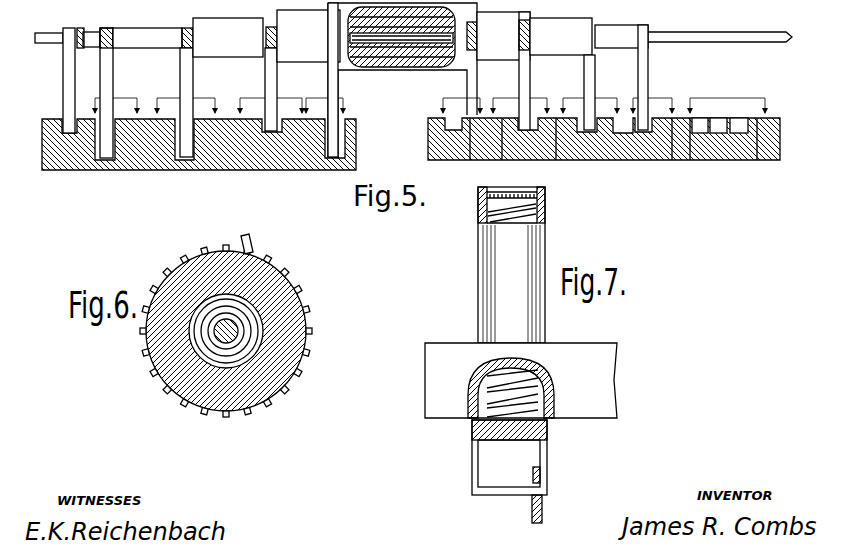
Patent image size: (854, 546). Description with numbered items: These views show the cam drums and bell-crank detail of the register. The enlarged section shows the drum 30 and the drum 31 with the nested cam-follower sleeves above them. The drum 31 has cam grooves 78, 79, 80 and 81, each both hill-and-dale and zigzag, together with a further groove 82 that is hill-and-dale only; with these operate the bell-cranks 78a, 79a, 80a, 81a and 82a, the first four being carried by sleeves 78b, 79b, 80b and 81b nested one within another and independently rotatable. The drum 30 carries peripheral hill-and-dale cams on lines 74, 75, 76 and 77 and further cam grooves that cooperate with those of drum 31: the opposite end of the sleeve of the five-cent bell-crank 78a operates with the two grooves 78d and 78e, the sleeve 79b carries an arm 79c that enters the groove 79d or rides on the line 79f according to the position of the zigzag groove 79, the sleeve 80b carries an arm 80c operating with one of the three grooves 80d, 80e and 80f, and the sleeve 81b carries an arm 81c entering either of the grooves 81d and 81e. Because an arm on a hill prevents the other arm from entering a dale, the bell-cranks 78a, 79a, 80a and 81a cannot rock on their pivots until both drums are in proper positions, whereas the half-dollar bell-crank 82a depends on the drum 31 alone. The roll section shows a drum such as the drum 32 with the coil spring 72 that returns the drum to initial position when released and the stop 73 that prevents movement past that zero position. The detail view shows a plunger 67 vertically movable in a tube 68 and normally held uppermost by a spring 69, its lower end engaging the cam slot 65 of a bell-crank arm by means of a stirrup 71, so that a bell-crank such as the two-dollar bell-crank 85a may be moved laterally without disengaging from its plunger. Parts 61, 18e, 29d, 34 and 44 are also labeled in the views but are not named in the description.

In FIG. 5, the drum 30 is at (681, 140).
In FIG. 5, the drum 31 is at (228, 150).
In FIG. 5, the rod 61 is at (52, 43).
In FIG. 5, the cam line 74 is at (780, 31).
In FIG. 5, the cam line 75 is at (740, 134).
In FIG. 5, the cam line 76 is at (748, 31).
In FIG. 5, the cam line 77 is at (701, 134).
In FIG. 5, the cam groove 78 is at (333, 160).
In FIG. 5, the bell-crank 78a is at (340, 88).
In FIG. 5, the sleeve 78b is at (403, 70).
In FIG. 5, the hill-and-dale groove 78d is at (452, 134).
In FIG. 5, the hill-and-dale groove 78e is at (490, 140).
In FIG. 5, the cam groove 79 is at (272, 134).
In FIG. 5, the bell-crank 79a is at (273, 90).
In FIG. 5, the sleeve 79b is at (350, 35).
In FIG. 5, the arm 79c is at (526, 88).
In FIG. 5, the cam groove 79d is at (477, 169).
In FIG. 5, the line 79f is at (548, 200).
In FIG. 5, the cam groove 80 is at (186, 160).
In FIG. 5, the bell-crank 80a is at (190, 88).
In FIG. 5, the sleeve 80b is at (228, 37).
In FIG. 5, the arm 80c is at (586, 74).
In FIG. 5, the hill-and-dale cam groove 80d is at (608, 234).
In FIG. 5, the hill-and-dale cam groove 80e is at (595, 160).
In FIG. 5, the hill-and-dale cam groove 80f is at (603, 160).
In FIG. 5, the cam groove 81 is at (106, 160).
In FIG. 5, the bell-crank 81a is at (106, 28).
In FIG. 5, the sleeve 81b is at (147, 38).
In FIG. 5, the arm 81c is at (649, 74).
In FIG. 5, the hill-and-dale groove 81d is at (648, 160).
In FIG. 5, the hill-and-dale groove 81e is at (664, 177).
In FIG. 5, the cam groove 82 is at (69, 134).
In FIG. 5, the bell-crank 82a is at (80, 28).
In FIG. 5, the member 18e is at (623, 16).
In FIG. 6, the gear teeth 29d is at (147, 345).
In FIG. 6, the drum 32 is at (172, 388).
In FIG. 6, the shaft 34 is at (232, 335).
In FIG. 6, the coil spring 72 is at (218, 362).
In FIG. 6, the stop 73 is at (243, 238).
In FIG. 7, the plate 44 is at (443, 410).
In FIG. 7, the cam slot 65 is at (545, 496).
In FIG. 7, the plunger 67 is at (509, 421).
In FIG. 7, the tube 68 is at (479, 306).
In FIG. 7, the spring 69 is at (483, 218).
In FIG. 7, the stirrup 71 is at (495, 485).
In FIG. 7, the bell-crank 85a is at (538, 520).